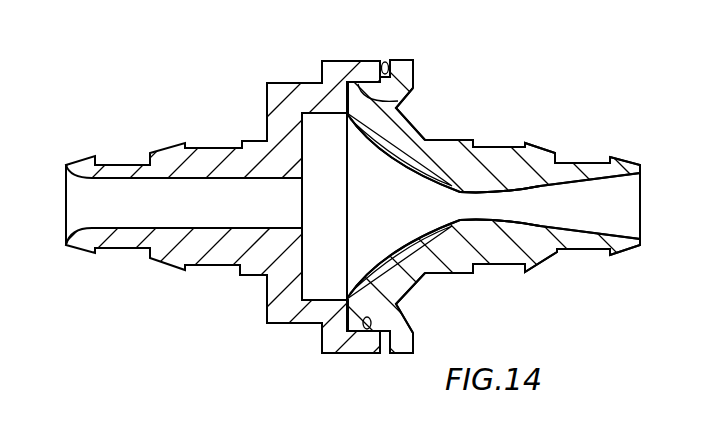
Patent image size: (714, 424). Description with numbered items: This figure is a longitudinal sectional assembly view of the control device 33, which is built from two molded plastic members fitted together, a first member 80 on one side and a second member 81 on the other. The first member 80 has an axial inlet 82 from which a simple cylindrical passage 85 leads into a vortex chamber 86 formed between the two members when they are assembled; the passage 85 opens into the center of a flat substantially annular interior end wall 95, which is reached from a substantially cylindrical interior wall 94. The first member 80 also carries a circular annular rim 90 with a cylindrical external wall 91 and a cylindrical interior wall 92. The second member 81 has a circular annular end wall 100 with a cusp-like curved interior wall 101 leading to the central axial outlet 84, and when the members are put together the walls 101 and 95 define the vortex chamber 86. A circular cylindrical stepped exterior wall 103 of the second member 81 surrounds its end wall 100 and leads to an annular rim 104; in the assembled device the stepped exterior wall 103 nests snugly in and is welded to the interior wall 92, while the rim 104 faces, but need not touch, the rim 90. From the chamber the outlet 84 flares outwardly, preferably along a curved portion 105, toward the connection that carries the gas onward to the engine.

The control device 33 is at (427, 61).
The first molded plastic member 80 is at (265, 79).
The second molded plastic member 81 is at (441, 134).
The axial inlet 82 is at (93, 212).
The axial outlet 84 is at (628, 210).
The cylindrical passage 85 is at (252, 180).
The vortex chamber 86 is at (392, 235).
The circular annular rim 90 is at (385, 62).
The cylindrical external wall 91 is at (351, 60).
The cylindrical interior wall 92 is at (406, 102).
The substantially cylindrical interior wall 94 is at (315, 113).
The flat substantially annular interior end wall 95 is at (303, 172).
The circular annular end wall 100 is at (350, 290).
The cusp-like curved interior wall 101 is at (390, 162).
The circular cylindrical stepped exterior wall 103 is at (371, 330).
The annular rim 104 is at (389, 68).
The curved portion 105 is at (522, 227).